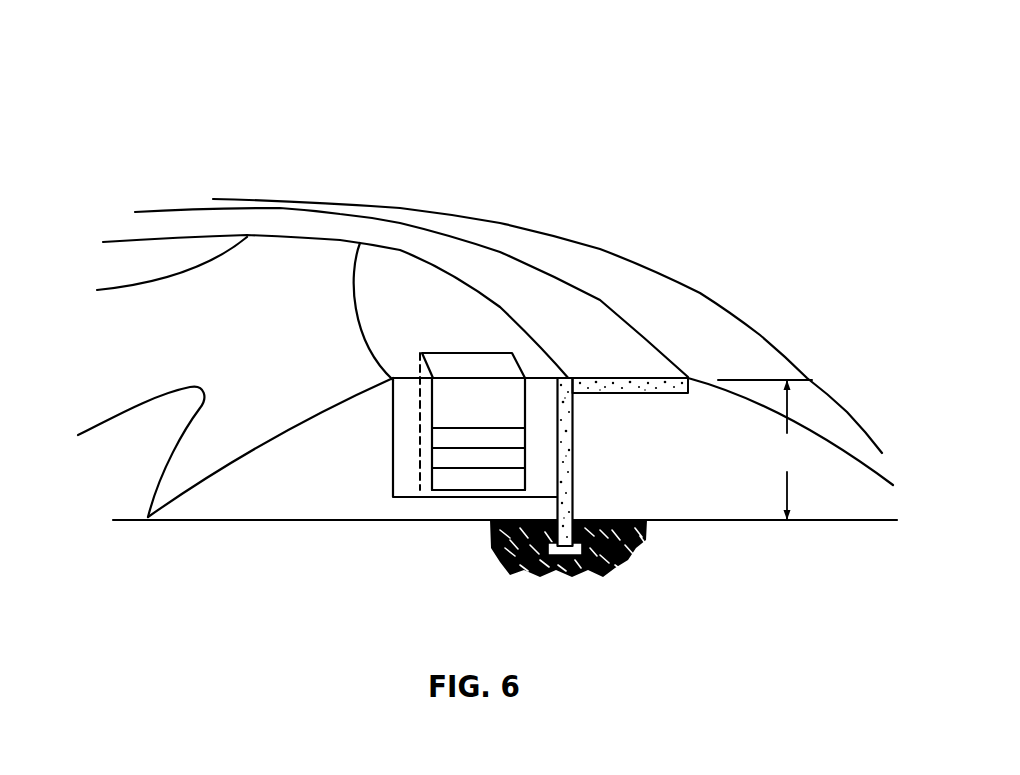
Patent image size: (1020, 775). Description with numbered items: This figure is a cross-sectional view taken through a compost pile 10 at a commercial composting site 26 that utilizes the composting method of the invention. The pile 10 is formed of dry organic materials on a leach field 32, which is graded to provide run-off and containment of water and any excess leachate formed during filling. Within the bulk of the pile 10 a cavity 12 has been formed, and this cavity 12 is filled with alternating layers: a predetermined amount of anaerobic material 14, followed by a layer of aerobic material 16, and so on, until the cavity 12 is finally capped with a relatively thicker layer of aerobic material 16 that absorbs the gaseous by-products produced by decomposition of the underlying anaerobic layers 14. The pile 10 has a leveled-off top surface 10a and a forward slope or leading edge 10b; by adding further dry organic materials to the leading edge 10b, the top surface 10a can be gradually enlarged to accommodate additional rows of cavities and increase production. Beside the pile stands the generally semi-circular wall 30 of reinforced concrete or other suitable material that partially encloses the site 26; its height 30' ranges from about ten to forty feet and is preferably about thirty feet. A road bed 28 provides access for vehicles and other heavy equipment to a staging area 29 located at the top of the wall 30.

The compost pile 10 is at (93, 278).
The top surface 10a is at (538, 353).
The leading edge 10b is at (242, 447).
The cavity 12 is at (482, 363).
The anaerobic material 14 is at (443, 430).
The aerobic material 16 is at (447, 400).
The composting site 26 is at (370, 110).
The road bed 28 is at (568, 305).
The staging area 29 is at (190, 223).
The wall 30 is at (618, 466).
The height of the wall 30' is at (765, 450).
The leach field 32 is at (87, 472).